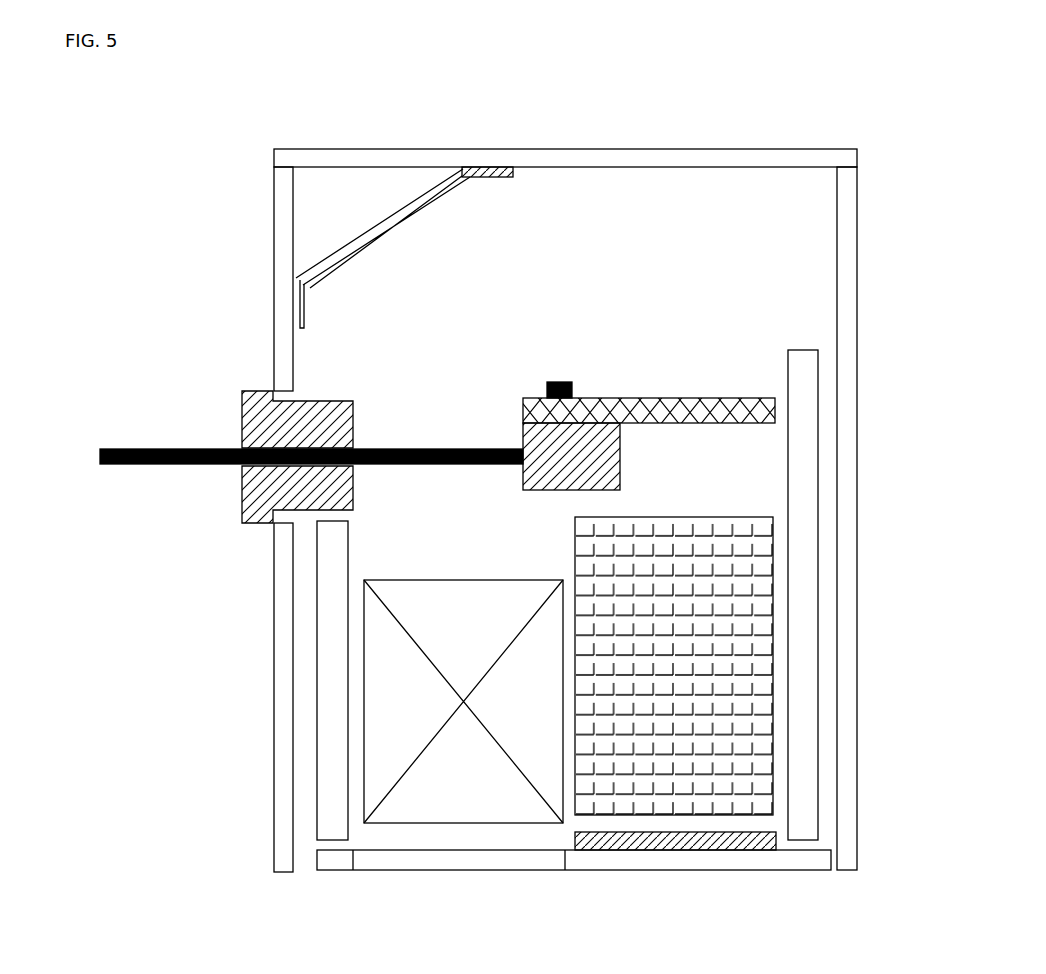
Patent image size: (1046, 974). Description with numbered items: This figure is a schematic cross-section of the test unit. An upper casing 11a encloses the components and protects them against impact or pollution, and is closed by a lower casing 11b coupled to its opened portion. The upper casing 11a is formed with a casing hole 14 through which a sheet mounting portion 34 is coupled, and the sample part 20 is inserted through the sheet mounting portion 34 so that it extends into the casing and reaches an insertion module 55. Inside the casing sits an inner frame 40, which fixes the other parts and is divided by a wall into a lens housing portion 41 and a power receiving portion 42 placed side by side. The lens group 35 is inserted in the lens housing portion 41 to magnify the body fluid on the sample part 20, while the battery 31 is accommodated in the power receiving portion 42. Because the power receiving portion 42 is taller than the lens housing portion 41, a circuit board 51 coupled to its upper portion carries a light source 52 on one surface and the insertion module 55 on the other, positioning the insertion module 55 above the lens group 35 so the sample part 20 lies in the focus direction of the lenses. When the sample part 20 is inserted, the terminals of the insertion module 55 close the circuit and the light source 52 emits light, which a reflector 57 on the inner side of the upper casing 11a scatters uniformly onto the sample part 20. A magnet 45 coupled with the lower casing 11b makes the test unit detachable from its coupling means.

The upper casing 11a is at (555, 150).
The lower casing 11b is at (612, 872).
The casing hole 14 is at (278, 520).
The sample part 20 is at (175, 447).
The battery 31 is at (760, 632).
The sheet mounting portion 34 is at (243, 391).
The lens group 35 is at (397, 710).
The inner frame 40 is at (330, 815).
The lens housing portion 41 is at (443, 557).
The power receiving portion 42 is at (745, 502).
The magnet 45 is at (705, 851).
The circuit board 51 is at (687, 398).
The light source 52 is at (565, 383).
The insertion module 55 is at (597, 445).
The reflector 57 is at (470, 172).